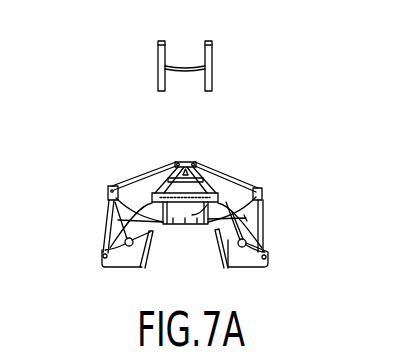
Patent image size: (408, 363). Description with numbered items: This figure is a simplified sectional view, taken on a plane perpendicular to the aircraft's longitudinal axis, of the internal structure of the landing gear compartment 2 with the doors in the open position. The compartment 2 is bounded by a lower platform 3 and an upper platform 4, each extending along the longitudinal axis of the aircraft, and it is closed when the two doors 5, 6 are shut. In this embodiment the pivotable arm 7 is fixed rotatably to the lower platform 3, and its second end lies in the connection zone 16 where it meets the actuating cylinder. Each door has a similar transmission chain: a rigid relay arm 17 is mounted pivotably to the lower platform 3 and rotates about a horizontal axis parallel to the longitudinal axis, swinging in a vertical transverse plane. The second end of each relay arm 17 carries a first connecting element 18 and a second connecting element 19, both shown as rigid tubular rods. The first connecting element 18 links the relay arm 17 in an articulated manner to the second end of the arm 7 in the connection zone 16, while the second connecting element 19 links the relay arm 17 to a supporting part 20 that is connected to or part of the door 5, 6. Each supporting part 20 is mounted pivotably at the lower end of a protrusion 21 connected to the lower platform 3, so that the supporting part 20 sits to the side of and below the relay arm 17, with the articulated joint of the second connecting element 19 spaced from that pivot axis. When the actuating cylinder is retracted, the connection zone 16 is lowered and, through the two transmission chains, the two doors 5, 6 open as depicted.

The compartment 2 is at (190, 117).
The lower platform 3 is at (252, 188).
The upper platform 4 is at (158, 57).
The door 5 is at (153, 247).
The door 6 is at (217, 252).
The pivotable arm 7 is at (160, 179).
The connection zone 16 is at (181, 157).
The relay arm 17 is at (258, 192).
The first connecting element 18 is at (218, 170).
The second connecting element 19 is at (264, 225).
The supporting part 20 is at (118, 262).
The protrusion 21 is at (112, 212).